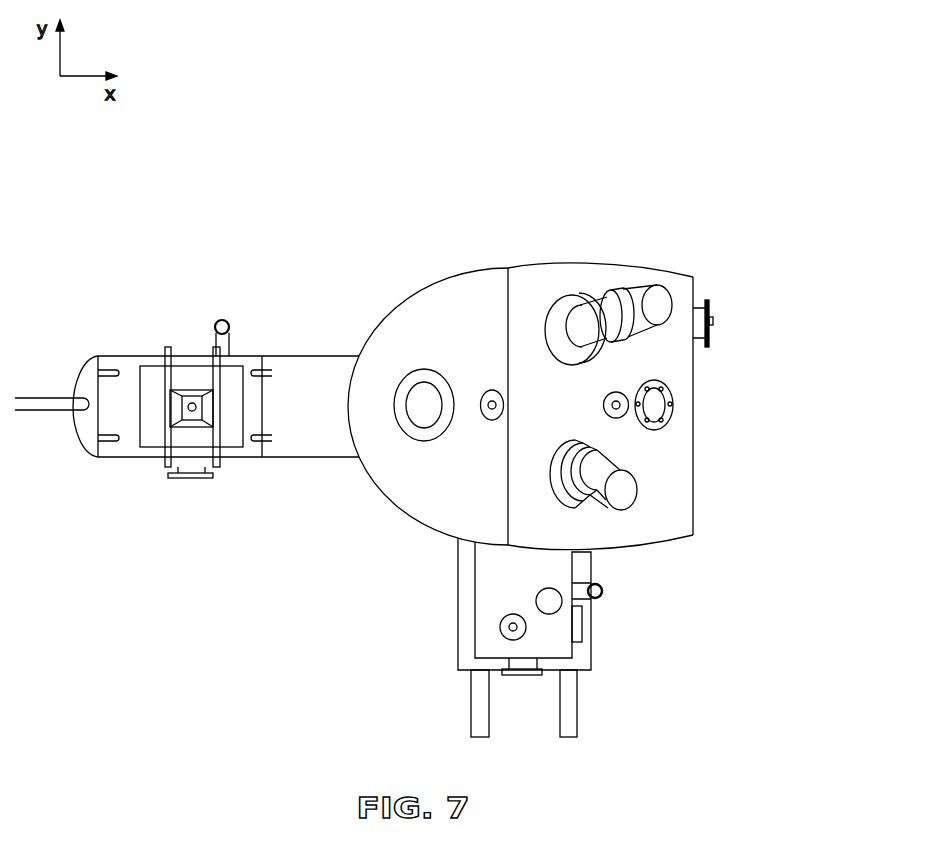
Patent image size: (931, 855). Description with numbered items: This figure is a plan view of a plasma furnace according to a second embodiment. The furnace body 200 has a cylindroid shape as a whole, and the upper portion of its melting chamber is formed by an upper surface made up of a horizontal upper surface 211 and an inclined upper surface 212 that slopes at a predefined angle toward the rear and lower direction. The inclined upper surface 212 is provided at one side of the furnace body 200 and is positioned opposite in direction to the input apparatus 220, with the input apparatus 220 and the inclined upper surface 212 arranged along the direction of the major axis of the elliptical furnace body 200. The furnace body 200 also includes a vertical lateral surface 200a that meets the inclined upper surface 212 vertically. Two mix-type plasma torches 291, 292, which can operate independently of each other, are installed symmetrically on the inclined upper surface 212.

The furnace body 200 is at (647, 575).
The vertical lateral surface 200a is at (682, 364).
The horizontal upper surface 211 is at (423, 293).
The inclined upper surface 212 is at (558, 262).
The input apparatus 220 is at (290, 355).
The mix-type plasma torch 291 is at (622, 493).
The mix-type plasma torch 292 is at (658, 300).